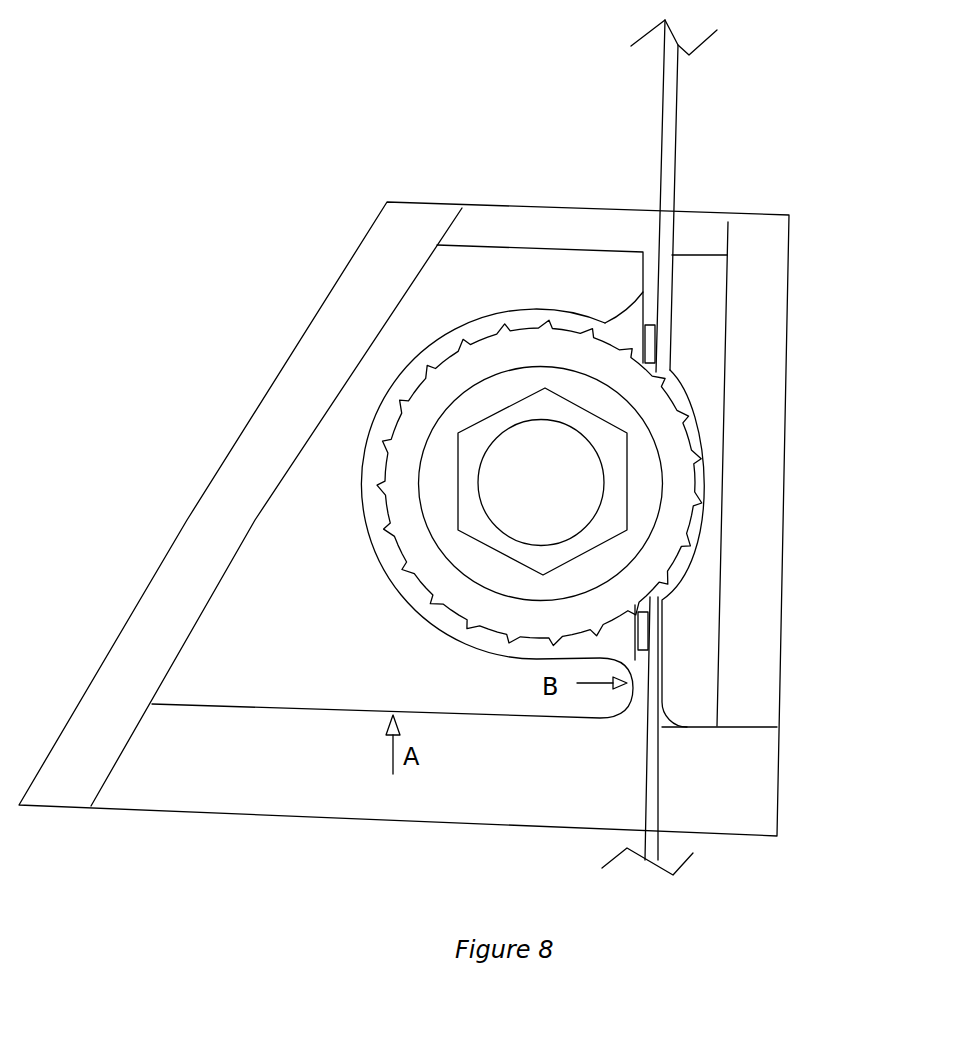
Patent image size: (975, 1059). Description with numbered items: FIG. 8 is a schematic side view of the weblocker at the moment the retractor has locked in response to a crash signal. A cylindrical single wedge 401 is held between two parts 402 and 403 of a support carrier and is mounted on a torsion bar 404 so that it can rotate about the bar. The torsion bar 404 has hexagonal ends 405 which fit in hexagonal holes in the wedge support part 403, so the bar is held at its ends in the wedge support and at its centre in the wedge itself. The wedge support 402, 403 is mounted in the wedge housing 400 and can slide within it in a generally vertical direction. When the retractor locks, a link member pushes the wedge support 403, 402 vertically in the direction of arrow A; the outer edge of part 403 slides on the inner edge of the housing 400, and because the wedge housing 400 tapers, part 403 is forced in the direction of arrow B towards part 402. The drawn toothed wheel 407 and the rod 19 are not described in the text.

The wedge housing 400 is at (405, 222).
The wedge support part 403 is at (430, 293).
The toothed ratchet wheel 407 is at (400, 383).
The cylindrical single wedge 401 is at (405, 440).
The hexagonal ends 405 is at (456, 480).
The torsion bar 404 is at (150, 547).
The wedge support part 402 is at (705, 323).
The rod 19 is at (640, 862).